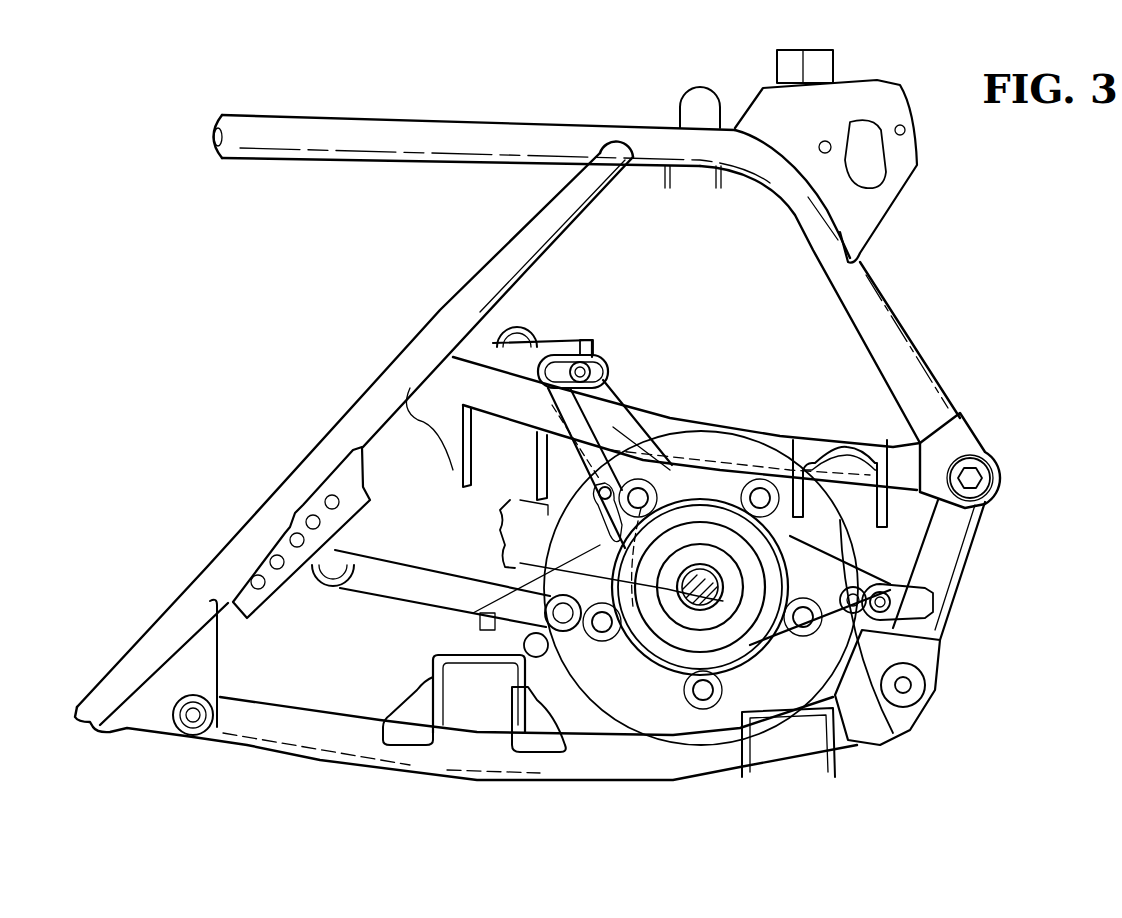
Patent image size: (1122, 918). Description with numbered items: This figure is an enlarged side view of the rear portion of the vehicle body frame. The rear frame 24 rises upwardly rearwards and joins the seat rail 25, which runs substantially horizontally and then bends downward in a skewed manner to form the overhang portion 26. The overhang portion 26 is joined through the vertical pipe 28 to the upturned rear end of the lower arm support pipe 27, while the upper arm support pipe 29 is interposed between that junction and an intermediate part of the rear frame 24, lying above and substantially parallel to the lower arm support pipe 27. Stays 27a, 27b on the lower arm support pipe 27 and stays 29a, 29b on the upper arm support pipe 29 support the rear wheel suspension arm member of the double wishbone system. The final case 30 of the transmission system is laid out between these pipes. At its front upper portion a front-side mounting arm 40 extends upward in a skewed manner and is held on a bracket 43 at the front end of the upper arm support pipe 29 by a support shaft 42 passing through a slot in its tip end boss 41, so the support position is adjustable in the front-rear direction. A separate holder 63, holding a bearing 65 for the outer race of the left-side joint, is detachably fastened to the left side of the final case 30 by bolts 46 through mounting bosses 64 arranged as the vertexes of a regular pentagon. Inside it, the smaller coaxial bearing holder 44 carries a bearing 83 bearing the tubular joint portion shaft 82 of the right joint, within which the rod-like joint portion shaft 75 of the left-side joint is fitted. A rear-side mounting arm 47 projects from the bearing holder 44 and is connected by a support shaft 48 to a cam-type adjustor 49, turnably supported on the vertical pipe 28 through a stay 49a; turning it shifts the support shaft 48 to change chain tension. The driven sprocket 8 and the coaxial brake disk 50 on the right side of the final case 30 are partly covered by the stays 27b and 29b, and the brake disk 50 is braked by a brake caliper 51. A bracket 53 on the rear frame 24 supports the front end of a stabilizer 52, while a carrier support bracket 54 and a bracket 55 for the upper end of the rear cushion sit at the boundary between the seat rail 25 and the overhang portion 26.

The driven sprocket 8 is at (701, 628).
The brake disk 50 is at (603, 705).
The rear frame 24 is at (505, 240).
The seat rail 25 is at (345, 127).
The overhang portion 26 is at (893, 306).
The lower arm support pipe 27 is at (273, 742).
The stay 27a is at (400, 728).
The stay 27b is at (773, 717).
The vertical pipe 28 is at (987, 510).
The upper arm support pipe 29 is at (527, 343).
The stay 29a is at (477, 443).
The stay 29b is at (858, 448).
The final case 30 is at (708, 522).
The front-side mounting arm 40 is at (635, 405).
The tip end boss 41 is at (586, 340).
The support shaft 42 is at (603, 360).
The bracket 43 is at (540, 338).
The bearing holder 44 is at (712, 483).
The bolts 46 is at (627, 480).
The rear-side mounting arm 47 is at (890, 730).
The support shaft 48 is at (943, 640).
The cam-type adjustor 49 is at (947, 617).
The stay 49a is at (938, 570).
The brake caliper 51 is at (517, 520).
The stabilizer 52 is at (380, 590).
The bracket 53 is at (313, 500).
The carrier support bracket 54 is at (870, 83).
The bracket 55 is at (720, 188).
The separate holder 63 is at (650, 660).
The mounting bosses 64 is at (652, 490).
The bearing 65 is at (533, 503).
The joint portion shaft 75 is at (723, 601).
The joint portion shaft 82 is at (778, 641).
The bearing 83 is at (527, 577).